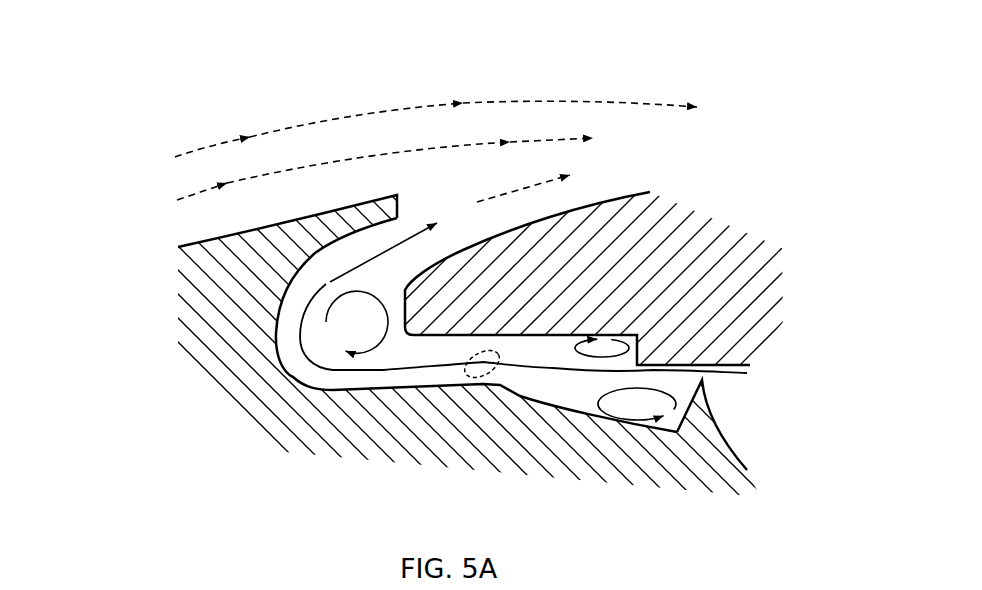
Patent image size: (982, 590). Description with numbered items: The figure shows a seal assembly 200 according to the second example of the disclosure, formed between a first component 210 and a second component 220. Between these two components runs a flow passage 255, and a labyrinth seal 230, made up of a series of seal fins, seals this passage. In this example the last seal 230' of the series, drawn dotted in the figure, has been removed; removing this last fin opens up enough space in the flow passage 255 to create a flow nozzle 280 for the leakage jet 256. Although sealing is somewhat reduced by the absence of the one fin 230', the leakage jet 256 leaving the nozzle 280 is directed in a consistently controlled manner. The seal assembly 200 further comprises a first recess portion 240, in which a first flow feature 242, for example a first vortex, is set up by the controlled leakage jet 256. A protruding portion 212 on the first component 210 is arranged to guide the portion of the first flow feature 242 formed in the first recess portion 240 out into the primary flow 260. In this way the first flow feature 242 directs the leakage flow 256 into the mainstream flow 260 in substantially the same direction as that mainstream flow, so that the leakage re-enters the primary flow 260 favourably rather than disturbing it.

The seal assembly 200 is at (602, 91).
The primary flow 260 is at (205, 149).
The protruding portion 212 is at (377, 213).
The second component 220 is at (670, 200).
The first component 210 is at (187, 317).
The first recess portion 240 is at (290, 357).
The first flow feature 242 is at (343, 328).
The flow passage 255 is at (413, 357).
The flow nozzle 280 is at (448, 358).
The last seal 230' is at (493, 434).
The labyrinth seal 230 is at (739, 425).
The leakage jet 256 is at (717, 373).